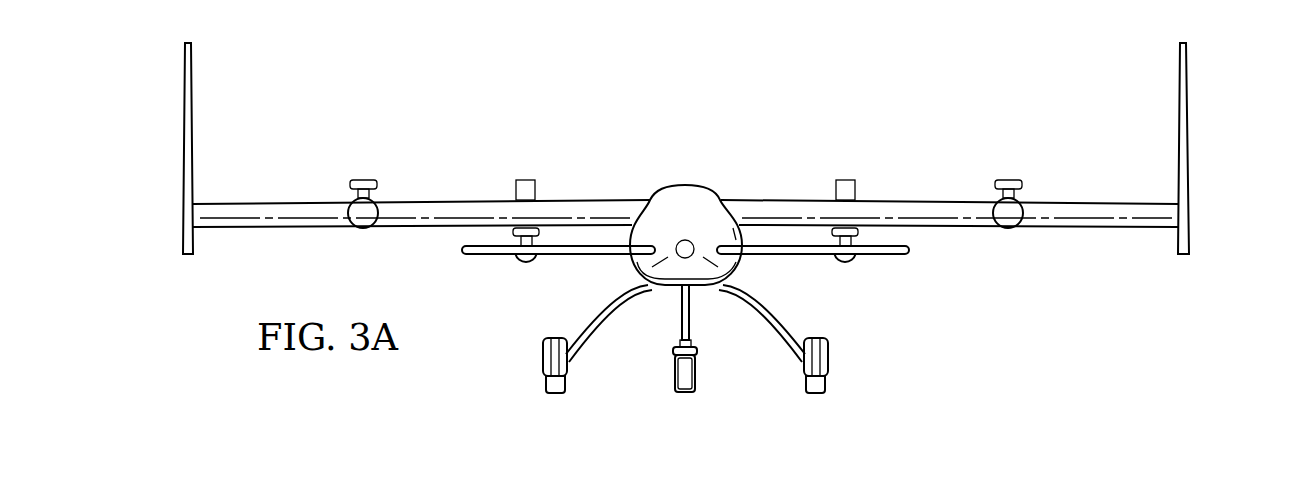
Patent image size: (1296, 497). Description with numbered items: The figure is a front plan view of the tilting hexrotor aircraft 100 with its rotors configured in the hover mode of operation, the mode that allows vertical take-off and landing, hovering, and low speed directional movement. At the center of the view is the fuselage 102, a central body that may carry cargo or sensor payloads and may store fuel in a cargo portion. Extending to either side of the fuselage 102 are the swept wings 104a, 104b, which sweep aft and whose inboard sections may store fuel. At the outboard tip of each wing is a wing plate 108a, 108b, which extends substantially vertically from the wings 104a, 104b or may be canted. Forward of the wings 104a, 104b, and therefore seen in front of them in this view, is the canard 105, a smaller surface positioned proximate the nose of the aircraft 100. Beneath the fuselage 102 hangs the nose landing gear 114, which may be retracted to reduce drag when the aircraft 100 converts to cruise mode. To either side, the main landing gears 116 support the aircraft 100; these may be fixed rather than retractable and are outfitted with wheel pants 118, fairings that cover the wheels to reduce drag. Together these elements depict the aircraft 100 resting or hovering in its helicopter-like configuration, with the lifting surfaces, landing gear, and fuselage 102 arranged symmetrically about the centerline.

The tiltrotor aircraft 100 is at (285, 74).
The fuselage 102 is at (683, 184).
The swept wing 104a is at (467, 200).
The swept wing 104b is at (903, 200).
The canard 105 is at (478, 256).
The wing plate 108a is at (183, 160).
The wing plate 108b is at (1190, 160).
The nose landing gear 114 is at (685, 394).
The main landing gear 116 is at (556, 394).
The wheel pant 118 is at (543, 358).